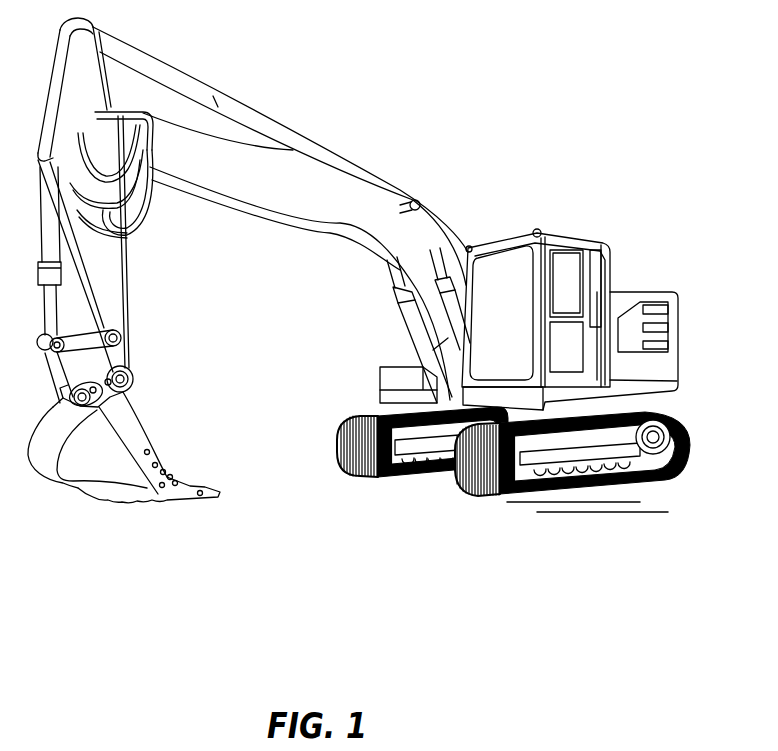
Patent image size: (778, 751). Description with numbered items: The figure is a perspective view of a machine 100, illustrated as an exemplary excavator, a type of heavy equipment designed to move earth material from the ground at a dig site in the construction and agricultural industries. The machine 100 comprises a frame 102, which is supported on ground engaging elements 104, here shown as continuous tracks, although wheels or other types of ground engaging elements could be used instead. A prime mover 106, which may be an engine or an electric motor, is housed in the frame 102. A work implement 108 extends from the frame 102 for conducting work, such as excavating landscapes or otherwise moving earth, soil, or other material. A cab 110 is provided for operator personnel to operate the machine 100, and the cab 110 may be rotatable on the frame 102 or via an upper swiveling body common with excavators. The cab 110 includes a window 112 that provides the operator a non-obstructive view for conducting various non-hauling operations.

The machine 100 is at (496, 120).
The frame 102 is at (383, 378).
The ground engaging elements 104 is at (360, 470).
The prime mover 106 is at (668, 365).
The work implement 108 is at (237, 110).
The cab 110 is at (570, 233).
The window 112 is at (516, 337).